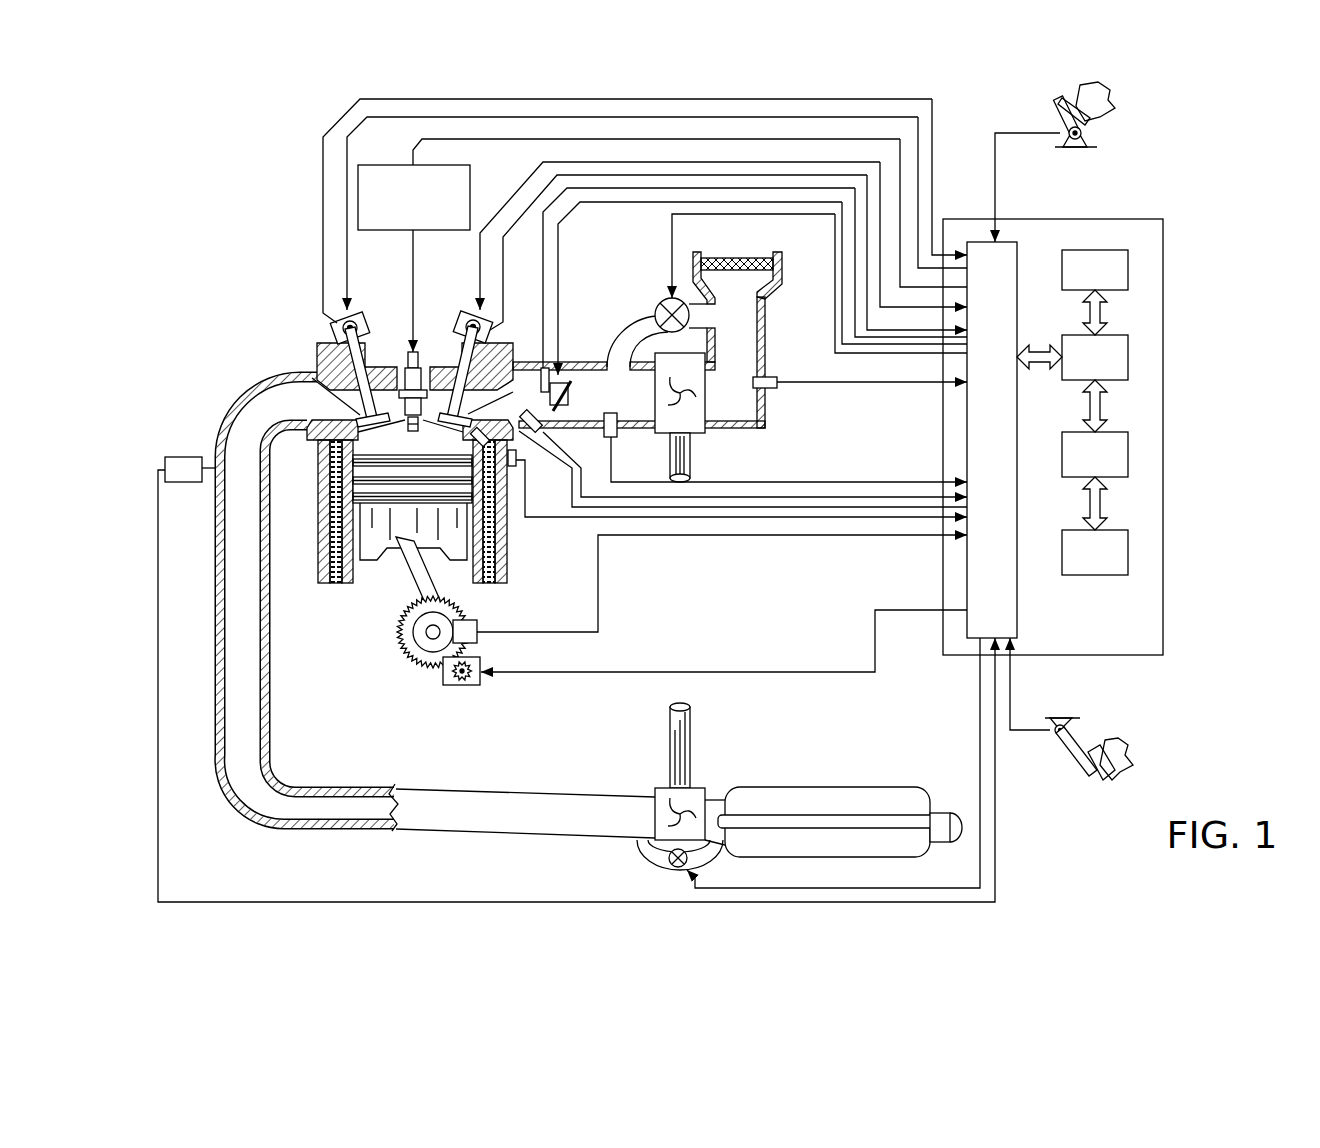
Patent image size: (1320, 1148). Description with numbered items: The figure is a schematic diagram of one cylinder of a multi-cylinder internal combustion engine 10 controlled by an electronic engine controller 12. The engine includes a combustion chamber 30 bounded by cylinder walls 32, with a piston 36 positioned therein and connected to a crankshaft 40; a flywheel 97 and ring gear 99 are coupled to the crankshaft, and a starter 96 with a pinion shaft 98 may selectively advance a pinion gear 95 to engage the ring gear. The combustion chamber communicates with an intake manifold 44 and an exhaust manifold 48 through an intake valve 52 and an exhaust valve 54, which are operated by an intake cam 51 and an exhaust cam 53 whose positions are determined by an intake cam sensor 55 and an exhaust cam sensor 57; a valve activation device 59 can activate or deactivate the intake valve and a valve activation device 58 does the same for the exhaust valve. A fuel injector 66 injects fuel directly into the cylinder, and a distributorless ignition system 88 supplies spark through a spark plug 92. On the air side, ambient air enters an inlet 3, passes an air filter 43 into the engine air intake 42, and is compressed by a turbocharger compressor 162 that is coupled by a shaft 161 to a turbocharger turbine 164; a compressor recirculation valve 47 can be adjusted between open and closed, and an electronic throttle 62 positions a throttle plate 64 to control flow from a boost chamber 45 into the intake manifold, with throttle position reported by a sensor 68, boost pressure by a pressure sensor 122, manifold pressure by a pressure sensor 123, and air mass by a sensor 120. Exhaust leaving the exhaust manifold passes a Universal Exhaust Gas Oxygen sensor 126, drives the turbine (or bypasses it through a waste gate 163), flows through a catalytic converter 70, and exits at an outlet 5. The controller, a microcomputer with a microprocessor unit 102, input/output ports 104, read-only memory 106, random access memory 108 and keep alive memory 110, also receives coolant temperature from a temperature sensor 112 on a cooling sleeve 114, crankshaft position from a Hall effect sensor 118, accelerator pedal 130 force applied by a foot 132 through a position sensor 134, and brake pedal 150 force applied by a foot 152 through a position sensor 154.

The internal combustion engine 10 is at (255, 300).
The electronic engine controller 12 is at (1163, 222).
The microprocessor unit 102 is at (1128, 362).
The input/output ports 104 is at (1020, 250).
The read-only memory 106 is at (1128, 265).
The random access memory 108 is at (1128, 460).
The keep alive memory 110 is at (1128, 558).
The accelerator pedal 130 is at (1058, 108).
The foot 132 is at (1105, 98).
The position sensor 134 is at (1092, 146).
The brake pedal 150 is at (1085, 770).
The foot 152 is at (1115, 745).
The position sensor 154 is at (1050, 723).
The distributorless ignition system 88 is at (370, 165).
The spark plug 92 is at (422, 365).
The exhaust cam 53 is at (345, 318).
The intake cam 51 is at (475, 318).
The exhaust cam sensor 57 is at (340, 327).
The intake cam sensor 55 is at (490, 335).
The valve activation device 58 is at (362, 322).
The valve activation device 59 is at (467, 340).
The exhaust valve 54 is at (322, 378).
The intake valve 52 is at (458, 400).
The combustion chamber 30 is at (328, 538).
The cylinder walls 32 is at (345, 583).
The piston 36 is at (395, 572).
The crankshaft 40 is at (412, 658).
The flywheel 97 is at (407, 638).
The ring gear 99 is at (425, 670).
The pinion shaft 98 is at (452, 686).
The pinion gear 95 is at (470, 690).
The starter 96 is at (480, 684).
The Hall effect sensor 118 is at (478, 625).
The cooling sleeve 114 is at (492, 540).
The temperature sensor 112 is at (518, 470).
The exhaust manifold 48 is at (273, 414).
The Universal Exhaust Gas Oxygen sensor 126 is at (165, 460).
The intake manifold 44 is at (509, 397).
The boost chamber 45 is at (607, 408).
The engine air intake 42 is at (612, 280).
The compressor recirculation valve 47 is at (658, 306).
The inlet 3 is at (746, 258).
The air filter 43 is at (740, 270).
The sensor 120 is at (775, 378).
The turbocharger compressor 162 is at (706, 420).
The shaft 161 is at (690, 450).
The turbocharger turbine 164 is at (660, 788).
The waste gate 163 is at (668, 862).
The throttle position sensor 68 is at (545, 368).
The electronic throttle 62 is at (568, 394).
The throttle plate 64 is at (557, 410).
The pressure sensor 122 is at (614, 437).
The pressure sensor 123 is at (545, 428).
The fuel injector 66 is at (505, 452).
The catalytic converter 70 is at (760, 787).
The outlet 5 is at (950, 810).